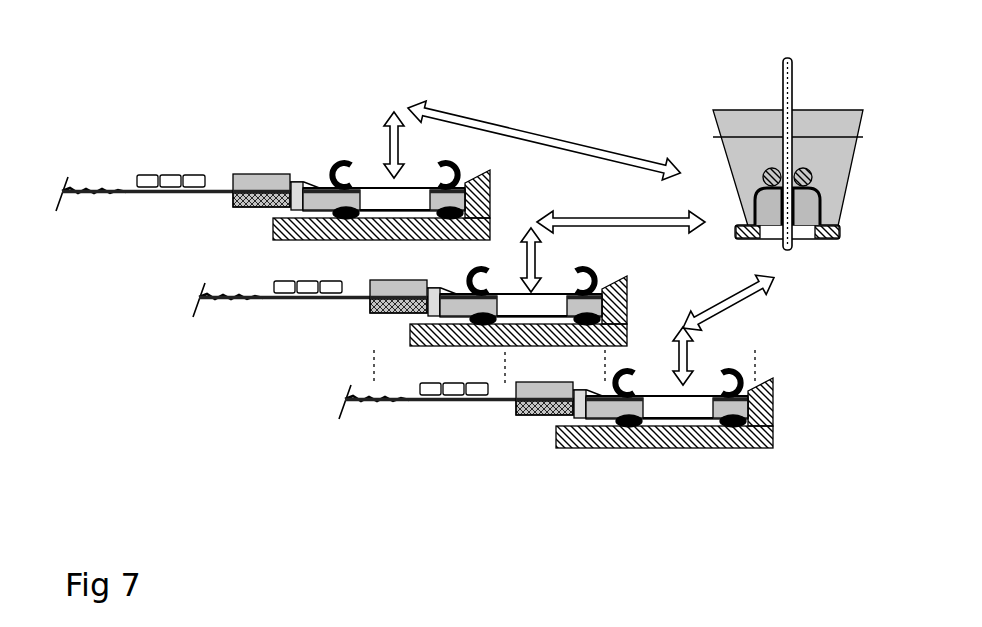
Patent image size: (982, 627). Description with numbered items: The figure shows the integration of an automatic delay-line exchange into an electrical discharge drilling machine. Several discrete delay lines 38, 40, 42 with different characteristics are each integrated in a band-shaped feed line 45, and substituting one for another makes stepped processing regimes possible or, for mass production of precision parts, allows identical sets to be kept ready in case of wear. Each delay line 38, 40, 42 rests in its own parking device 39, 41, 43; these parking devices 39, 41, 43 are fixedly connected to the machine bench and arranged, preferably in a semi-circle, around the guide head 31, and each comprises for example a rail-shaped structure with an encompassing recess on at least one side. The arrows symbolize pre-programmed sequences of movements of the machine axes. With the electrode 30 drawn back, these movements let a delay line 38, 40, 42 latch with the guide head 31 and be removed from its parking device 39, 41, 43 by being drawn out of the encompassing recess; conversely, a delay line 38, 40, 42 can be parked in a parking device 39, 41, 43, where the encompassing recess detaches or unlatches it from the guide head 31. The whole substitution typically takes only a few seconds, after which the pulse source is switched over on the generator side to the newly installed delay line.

The electrode 30 is at (793, 92).
The guide head 31 is at (733, 121).
The delay line 38 is at (256, 174).
The parking device 39 is at (320, 216).
The delay line 40 is at (386, 312).
The parking device 41 is at (421, 348).
The delay line 42 is at (537, 416).
The parking device 43 is at (638, 450).
The band-shaped feed line 45 is at (210, 193).